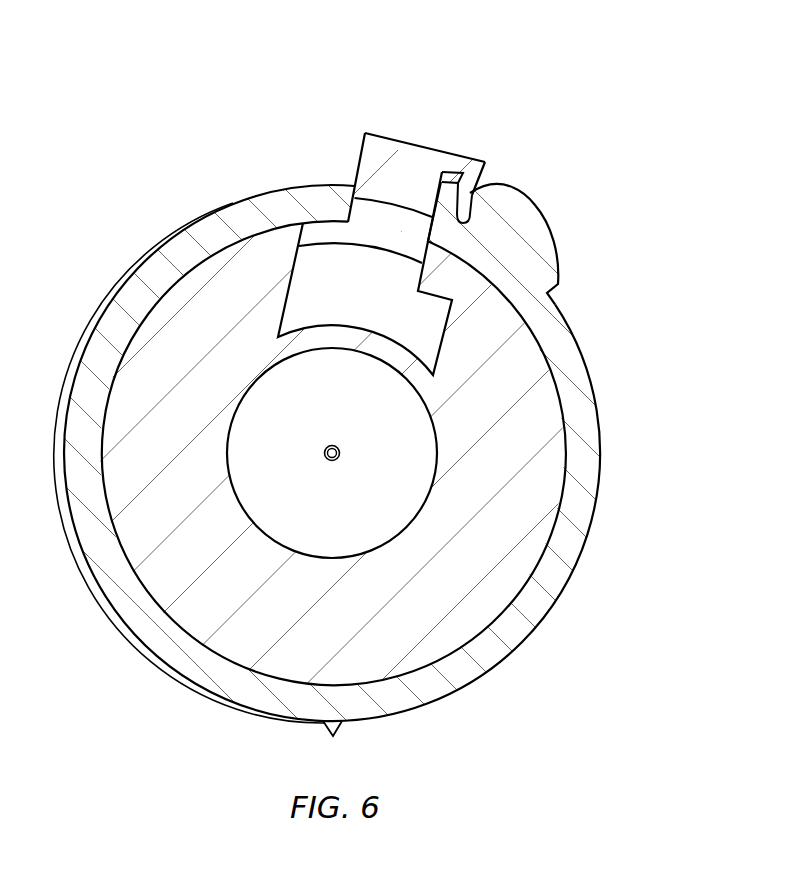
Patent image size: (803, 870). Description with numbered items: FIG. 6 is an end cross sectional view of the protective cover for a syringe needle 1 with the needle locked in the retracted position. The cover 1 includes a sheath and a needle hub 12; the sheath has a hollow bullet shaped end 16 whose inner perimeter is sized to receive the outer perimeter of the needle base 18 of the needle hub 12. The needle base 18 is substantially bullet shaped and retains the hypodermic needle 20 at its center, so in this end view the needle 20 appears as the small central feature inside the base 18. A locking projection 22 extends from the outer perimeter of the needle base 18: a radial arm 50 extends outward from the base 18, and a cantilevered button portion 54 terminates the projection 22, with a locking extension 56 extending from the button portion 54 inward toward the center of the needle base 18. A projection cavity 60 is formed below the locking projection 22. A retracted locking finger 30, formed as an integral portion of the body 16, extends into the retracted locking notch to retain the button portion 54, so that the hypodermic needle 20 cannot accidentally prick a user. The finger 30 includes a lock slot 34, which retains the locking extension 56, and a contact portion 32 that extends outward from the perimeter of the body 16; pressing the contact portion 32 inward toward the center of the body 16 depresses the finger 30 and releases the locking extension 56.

The protective cover for a syringe needle 1 is at (549, 660).
The needle hub 12 is at (136, 297).
The hollow bullet shaped end 16 is at (579, 372).
The needle base 18 is at (155, 578).
The hypodermic needle 20 is at (337, 445).
The locking projection 22 is at (419, 126).
The retracted locking finger 30 is at (545, 208).
The contact portion 32 is at (522, 233).
The lock slot 34 is at (497, 195).
The radial arm 50 is at (320, 235).
The button portion 54 is at (385, 145).
The locking extension 56 is at (466, 205).
The projection cavity 60 is at (300, 277).